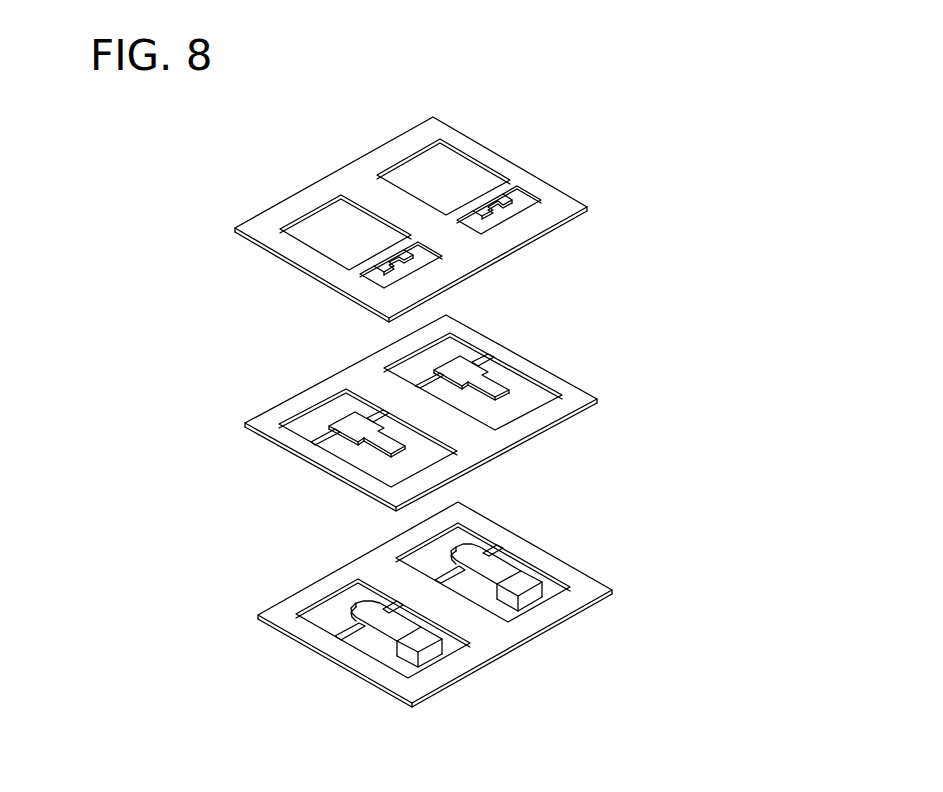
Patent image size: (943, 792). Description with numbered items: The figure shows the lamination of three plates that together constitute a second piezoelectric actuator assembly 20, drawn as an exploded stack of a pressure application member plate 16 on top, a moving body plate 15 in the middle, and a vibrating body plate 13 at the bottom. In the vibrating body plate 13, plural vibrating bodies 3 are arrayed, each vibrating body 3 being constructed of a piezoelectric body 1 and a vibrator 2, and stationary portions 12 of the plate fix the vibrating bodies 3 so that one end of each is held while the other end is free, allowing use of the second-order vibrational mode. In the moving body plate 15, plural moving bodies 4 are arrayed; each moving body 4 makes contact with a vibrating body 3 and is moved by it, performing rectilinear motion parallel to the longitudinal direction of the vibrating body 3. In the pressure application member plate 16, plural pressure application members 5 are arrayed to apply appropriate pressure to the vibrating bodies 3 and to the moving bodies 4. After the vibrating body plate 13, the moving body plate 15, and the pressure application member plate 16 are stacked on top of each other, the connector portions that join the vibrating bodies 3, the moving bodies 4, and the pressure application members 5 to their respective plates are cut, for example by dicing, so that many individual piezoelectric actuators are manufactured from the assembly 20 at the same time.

The piezoelectric body 1 is at (372, 642).
The vibrator 2 is at (353, 608).
The vibrating body 3 is at (483, 573).
The moving body 4 is at (352, 425).
The pressure application member 5 is at (483, 198).
The stationary portion 12 is at (402, 668).
The vibrating body plate 13 is at (678, 552).
The moving body plate 15 is at (678, 350).
The pressure application member plate 16 is at (666, 154).
The second piezoelectric actuator assembly 20 is at (734, 108).